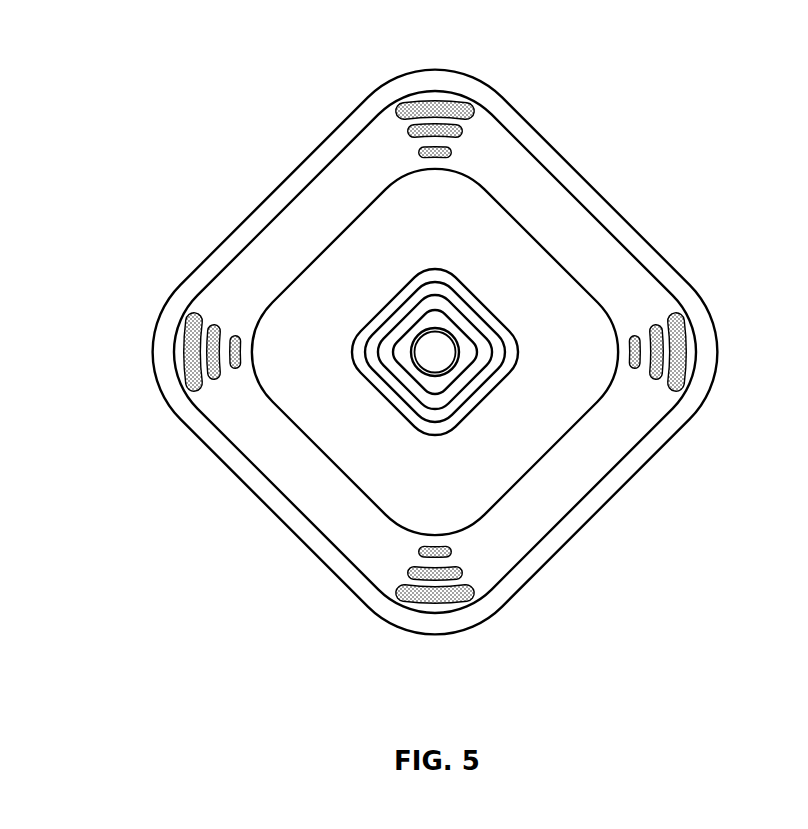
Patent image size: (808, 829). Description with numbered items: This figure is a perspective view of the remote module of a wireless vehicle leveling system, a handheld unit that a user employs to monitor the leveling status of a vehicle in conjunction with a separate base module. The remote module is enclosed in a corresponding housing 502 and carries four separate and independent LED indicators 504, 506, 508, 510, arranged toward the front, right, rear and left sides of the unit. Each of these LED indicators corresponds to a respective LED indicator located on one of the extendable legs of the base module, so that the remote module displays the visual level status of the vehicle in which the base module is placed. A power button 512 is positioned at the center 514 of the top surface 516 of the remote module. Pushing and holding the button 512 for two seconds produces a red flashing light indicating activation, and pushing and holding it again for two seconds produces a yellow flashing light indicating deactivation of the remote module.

The housing 502 is at (530, 257).
The LED indicator 504 is at (435, 100).
The LED indicator 506 is at (686, 352).
The LED indicator 508 is at (427, 583).
The LED indicator 510 is at (212, 350).
The power button 512 is at (435, 352).
The center 514 is at (432, 383).
The top surface 516 is at (485, 203).